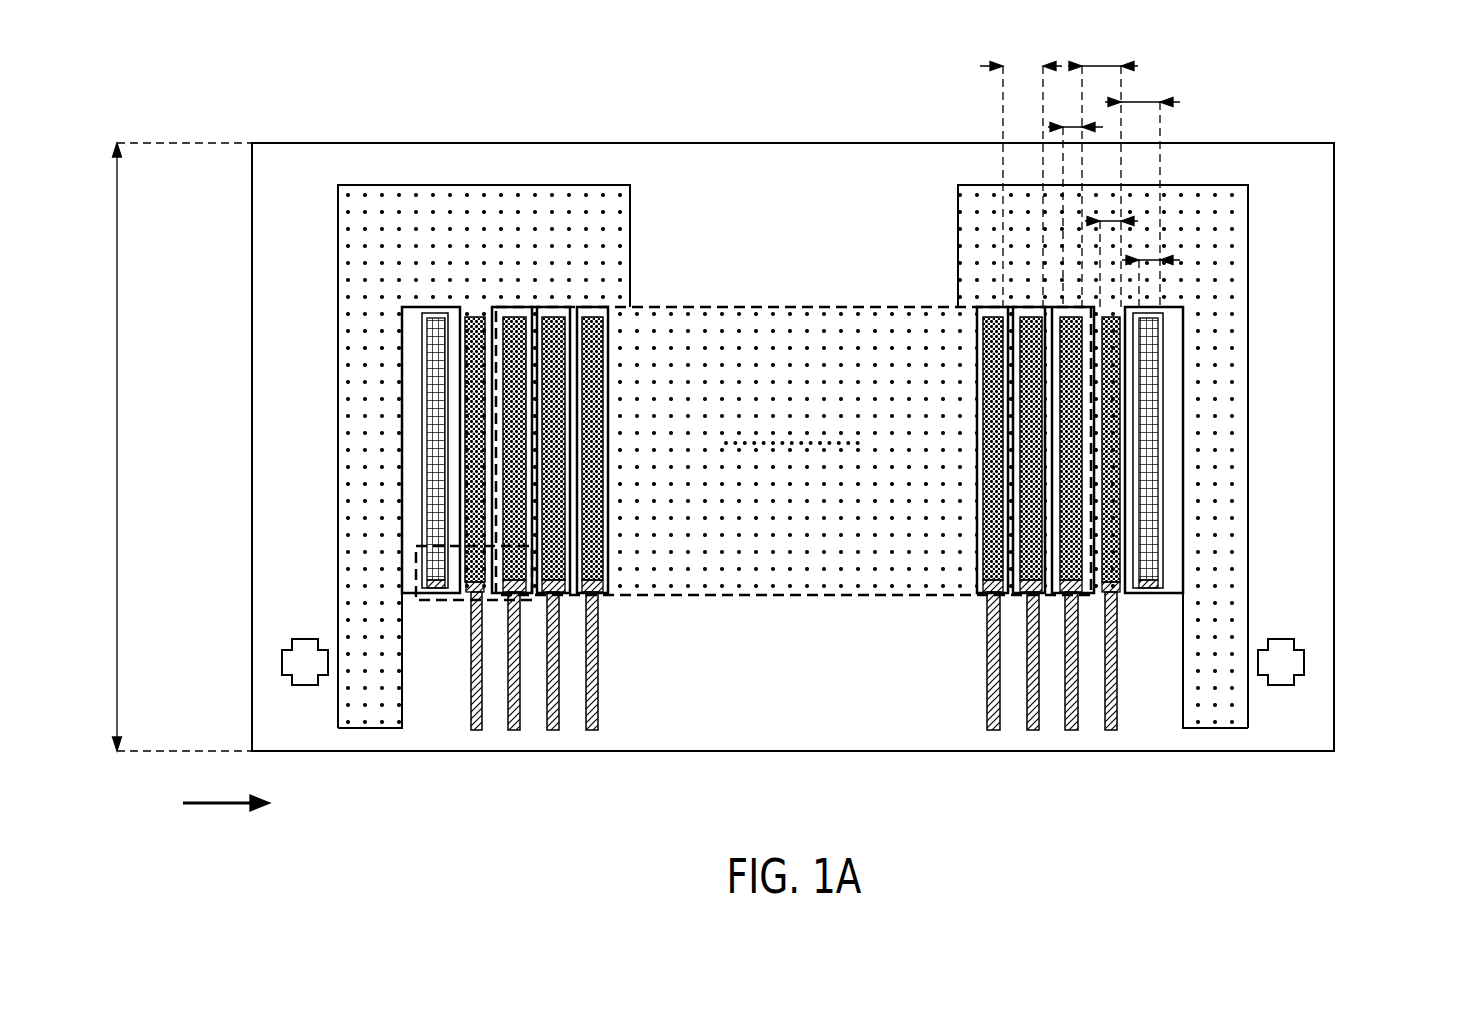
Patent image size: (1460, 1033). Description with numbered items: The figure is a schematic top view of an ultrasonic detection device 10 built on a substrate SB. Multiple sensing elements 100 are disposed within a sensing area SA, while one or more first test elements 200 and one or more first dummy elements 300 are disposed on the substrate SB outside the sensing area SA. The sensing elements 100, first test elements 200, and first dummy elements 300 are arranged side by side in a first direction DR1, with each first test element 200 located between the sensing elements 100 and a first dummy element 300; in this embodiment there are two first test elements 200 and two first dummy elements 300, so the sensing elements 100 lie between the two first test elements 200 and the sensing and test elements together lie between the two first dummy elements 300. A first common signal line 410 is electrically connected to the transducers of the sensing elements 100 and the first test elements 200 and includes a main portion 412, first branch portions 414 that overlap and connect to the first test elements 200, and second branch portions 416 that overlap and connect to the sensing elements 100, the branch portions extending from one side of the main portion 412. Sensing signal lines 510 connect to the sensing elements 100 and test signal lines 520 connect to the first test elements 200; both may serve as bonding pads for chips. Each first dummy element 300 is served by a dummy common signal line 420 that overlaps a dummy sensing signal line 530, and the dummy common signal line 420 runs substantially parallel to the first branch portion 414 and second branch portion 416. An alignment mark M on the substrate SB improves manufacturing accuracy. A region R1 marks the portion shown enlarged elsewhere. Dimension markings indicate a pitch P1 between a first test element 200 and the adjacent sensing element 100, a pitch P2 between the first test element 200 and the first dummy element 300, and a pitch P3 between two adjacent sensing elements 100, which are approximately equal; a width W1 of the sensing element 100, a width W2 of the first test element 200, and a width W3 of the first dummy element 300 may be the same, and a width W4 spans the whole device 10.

The ultrasonic detection device 10 is at (773, 447).
The sensing element 100 is at (512, 315).
The first test element 200 is at (473, 317).
The first dummy element 300 is at (433, 340).
The first common signal line 410 is at (793, 406).
The main portion 412 is at (355, 462).
The first branch portion 414 is at (793, 333).
The second branch portion 416 is at (793, 339).
The dummy common signal line 420 is at (400, 311).
The sensing signal line 510 is at (519, 722).
The test signal line 520 is at (480, 721).
The dummy sensing signal line 530 is at (437, 600).
The sensing area SA is at (800, 307).
The substrate SB is at (1334, 213).
The alignment mark M is at (297, 660).
The region R1 is at (424, 602).
The width of the sensing element W1 is at (1072, 127).
The width of the first test element W2 is at (1111, 221).
The width of the first dummy element W3 is at (1149, 260).
The width of the ultrasonic detection device W4 is at (166, 447).
The pitch between the first test element and the adjacent sensing element P1 is at (1103, 169).
The pitch between the first test element and the first dummy element P2 is at (1140, 102).
The pitch between two adjacent sensing elements P3 is at (1021, 169).
The first direction DR1 is at (229, 823).